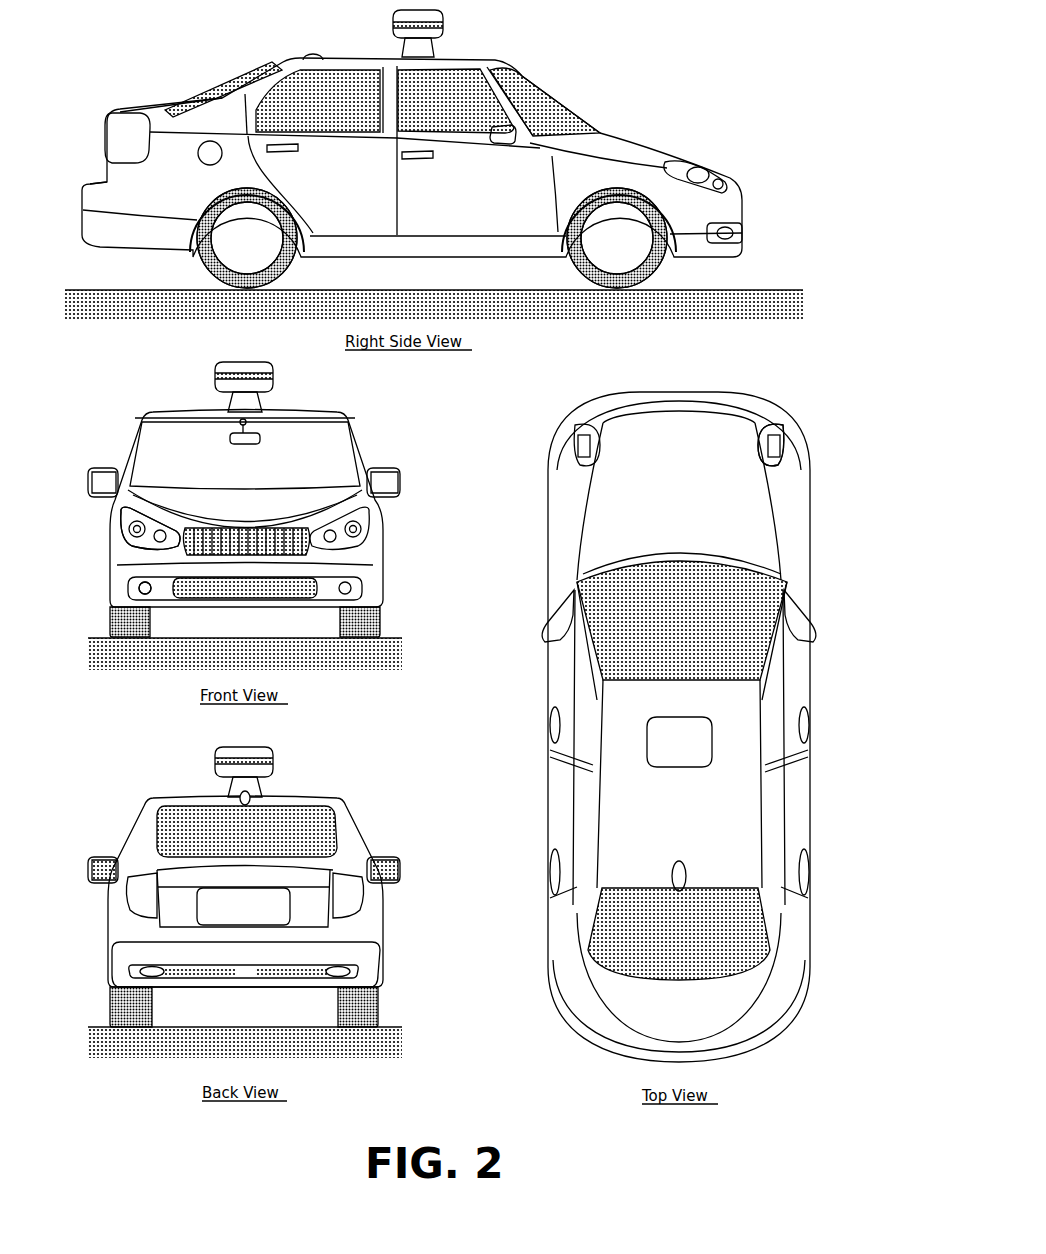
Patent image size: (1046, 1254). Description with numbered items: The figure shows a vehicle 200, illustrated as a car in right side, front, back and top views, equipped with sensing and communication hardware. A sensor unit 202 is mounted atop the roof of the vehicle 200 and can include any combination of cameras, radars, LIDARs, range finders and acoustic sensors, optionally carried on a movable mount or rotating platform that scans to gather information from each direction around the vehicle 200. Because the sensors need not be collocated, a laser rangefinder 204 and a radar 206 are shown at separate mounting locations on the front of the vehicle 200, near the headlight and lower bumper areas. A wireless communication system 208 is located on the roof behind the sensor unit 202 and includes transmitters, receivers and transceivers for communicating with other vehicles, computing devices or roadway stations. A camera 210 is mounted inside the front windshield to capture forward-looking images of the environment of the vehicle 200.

The vehicle 200 is at (75, 100).
The sensor unit 202 is at (445, 33).
The laser rangefinder 204 is at (728, 182).
The radar 206 is at (743, 232).
The wireless communication system 208 is at (311, 53).
The camera 210 is at (260, 437).